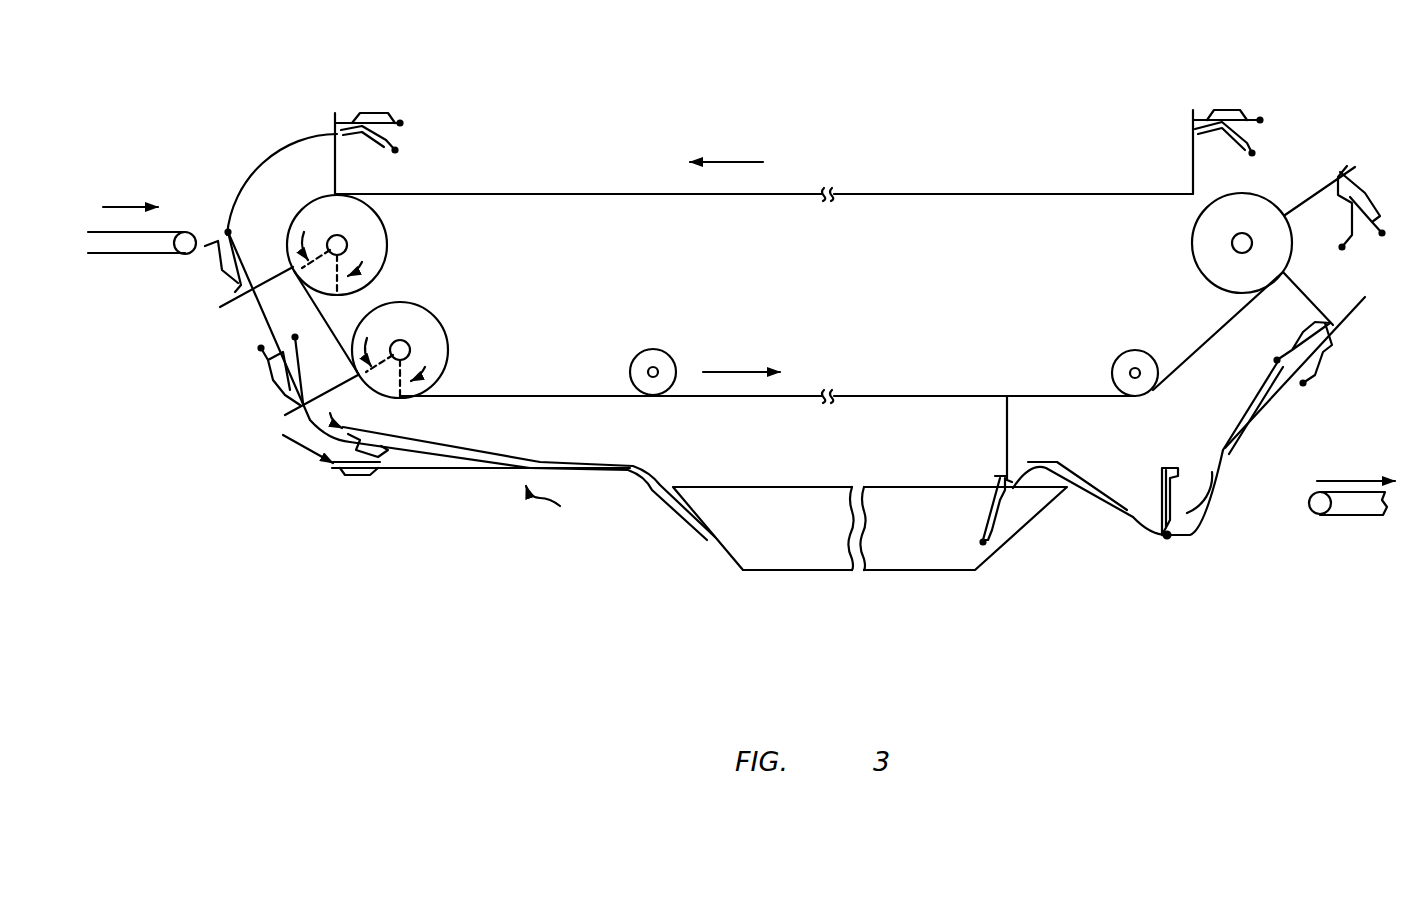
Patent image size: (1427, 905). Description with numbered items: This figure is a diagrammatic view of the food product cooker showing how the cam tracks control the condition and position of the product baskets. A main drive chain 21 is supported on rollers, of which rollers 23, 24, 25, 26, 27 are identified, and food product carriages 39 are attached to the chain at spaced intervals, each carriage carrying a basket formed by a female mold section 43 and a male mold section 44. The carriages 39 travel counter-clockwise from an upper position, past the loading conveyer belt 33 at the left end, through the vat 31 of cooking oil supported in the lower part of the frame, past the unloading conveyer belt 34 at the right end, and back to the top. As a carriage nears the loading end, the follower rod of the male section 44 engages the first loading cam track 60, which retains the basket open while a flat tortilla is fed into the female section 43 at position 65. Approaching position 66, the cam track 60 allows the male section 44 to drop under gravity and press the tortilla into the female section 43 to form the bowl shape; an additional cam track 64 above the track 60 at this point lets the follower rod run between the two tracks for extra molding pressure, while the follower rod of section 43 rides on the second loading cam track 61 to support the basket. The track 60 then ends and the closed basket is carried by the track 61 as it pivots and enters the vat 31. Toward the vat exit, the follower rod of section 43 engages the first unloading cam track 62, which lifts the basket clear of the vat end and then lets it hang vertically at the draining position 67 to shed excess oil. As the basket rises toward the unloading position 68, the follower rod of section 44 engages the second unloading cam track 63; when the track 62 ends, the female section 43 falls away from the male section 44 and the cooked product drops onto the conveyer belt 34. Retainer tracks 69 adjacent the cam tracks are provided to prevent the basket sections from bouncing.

The main drive chain 21 is at (890, 193).
The roller 23 is at (392, 244).
The roller 24 is at (450, 346).
The roller 25 is at (665, 351).
The roller 26 is at (1156, 334).
The roller 27 is at (1193, 248).
The vat 31 is at (870, 483).
The conveyer belt 33 is at (148, 256).
The conveyer belt 34 is at (1340, 517).
The food product carriage 39 is at (1193, 135).
The female mold section 43 is at (390, 120).
The male mold section 44 is at (400, 148).
The first loading cam track 60 is at (288, 146).
The second loading cam track 61 is at (423, 468).
The first unloading cam track 62 is at (1087, 502).
The second unloading cam track 63 is at (1365, 302).
The additional cam track 64 is at (490, 453).
The position 65 is at (197, 282).
The position 66 is at (560, 511).
The draining position 67 is at (1168, 545).
The unloading position 68 is at (1332, 366).
The retainer track 69 is at (1088, 491).